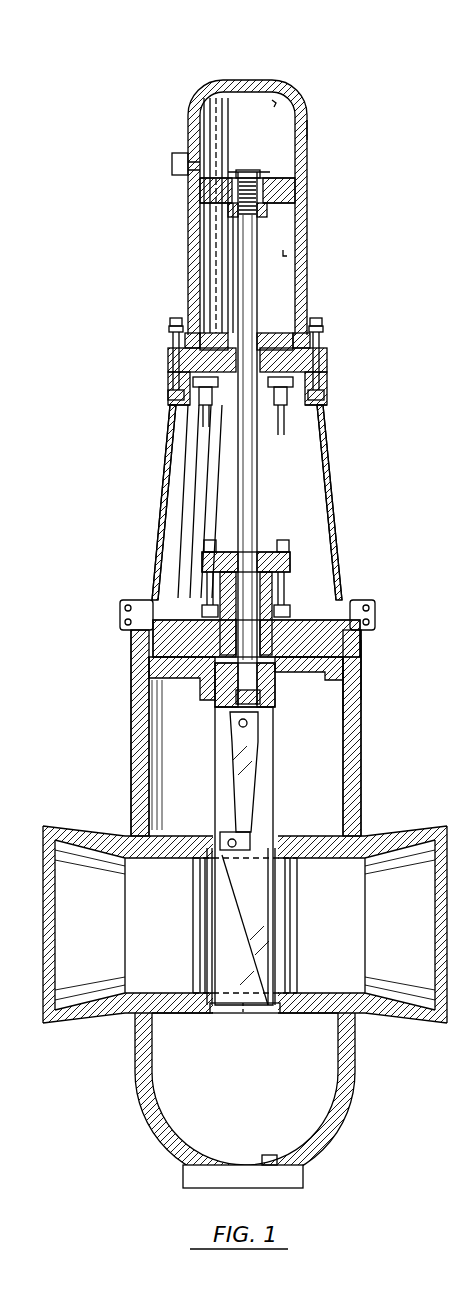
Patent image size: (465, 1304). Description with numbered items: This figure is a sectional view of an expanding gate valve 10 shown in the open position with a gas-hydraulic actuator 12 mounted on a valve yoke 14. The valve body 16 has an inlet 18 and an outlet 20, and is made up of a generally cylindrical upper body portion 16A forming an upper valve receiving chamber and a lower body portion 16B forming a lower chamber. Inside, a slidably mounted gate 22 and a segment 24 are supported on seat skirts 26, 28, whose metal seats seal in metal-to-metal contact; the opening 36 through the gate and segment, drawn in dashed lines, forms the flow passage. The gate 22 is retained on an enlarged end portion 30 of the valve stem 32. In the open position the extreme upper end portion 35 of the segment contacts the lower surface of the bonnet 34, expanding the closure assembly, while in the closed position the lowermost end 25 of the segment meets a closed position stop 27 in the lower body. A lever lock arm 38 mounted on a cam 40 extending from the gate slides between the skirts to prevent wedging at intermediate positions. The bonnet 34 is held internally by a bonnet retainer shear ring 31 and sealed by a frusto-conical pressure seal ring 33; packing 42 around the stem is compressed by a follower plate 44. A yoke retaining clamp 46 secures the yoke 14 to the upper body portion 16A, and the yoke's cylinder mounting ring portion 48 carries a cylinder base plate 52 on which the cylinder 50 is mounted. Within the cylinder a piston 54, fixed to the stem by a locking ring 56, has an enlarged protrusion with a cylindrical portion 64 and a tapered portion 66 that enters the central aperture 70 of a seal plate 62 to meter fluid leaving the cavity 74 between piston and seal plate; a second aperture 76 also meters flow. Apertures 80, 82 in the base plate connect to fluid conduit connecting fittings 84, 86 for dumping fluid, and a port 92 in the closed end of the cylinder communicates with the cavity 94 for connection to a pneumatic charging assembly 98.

The expanding gate valve 10 is at (362, 737).
The actuator 12 is at (310, 152).
The valve yoke 14 is at (332, 505).
The valve body 16 is at (131, 729).
The upper body portion 16A is at (348, 670).
The lower body portion 16B is at (352, 1075).
The inlet 18 is at (70, 905).
The outlet 20 is at (388, 855).
The gate 22 is at (218, 702).
The segment 24 is at (270, 780).
The lowermost end 25 is at (270, 1012).
The seat skirt 26 is at (187, 938).
The closed position stop 27 is at (268, 1155).
The seat skirt 28 is at (270, 972).
The enlarged end portion 30 is at (222, 672).
The bonnet retainer shear ring 31 is at (140, 608).
The valve stem 32 is at (250, 467).
The pressure seal ring 33 is at (160, 658).
The bonnet 34 is at (300, 670).
The upper end portion 35 is at (290, 682).
The opening 36 is at (243, 1013).
The lever lock arm 38 is at (232, 764).
The cam 40 is at (248, 726).
The packing 42 is at (270, 612).
The follower plate 44 is at (265, 548).
The yoke retaining clamp 46 is at (372, 600).
The cylinder mounting ring portion 48 is at (308, 395).
The cylinder 50 is at (305, 113).
The cylinder base plate 52 is at (190, 372).
The piston 54 is at (283, 181).
The locking ring 56 is at (237, 176).
The seal plate 62 is at (212, 346).
The cylindrical portion 64 is at (232, 209).
The tapered portion 66 is at (233, 232).
The aperture 70 is at (205, 340).
The cavity 74 is at (288, 253).
The aperture 76 is at (278, 333).
The aperture 80 is at (190, 412).
The aperture 82 is at (325, 342).
The fluid conduit connecting fitting 84 is at (187, 440).
The fluid conduit connecting fitting 86 is at (327, 366).
The port 92 is at (200, 165).
The cavity 94 is at (276, 100).
The pneumatic charging assembly 98 is at (172, 166).